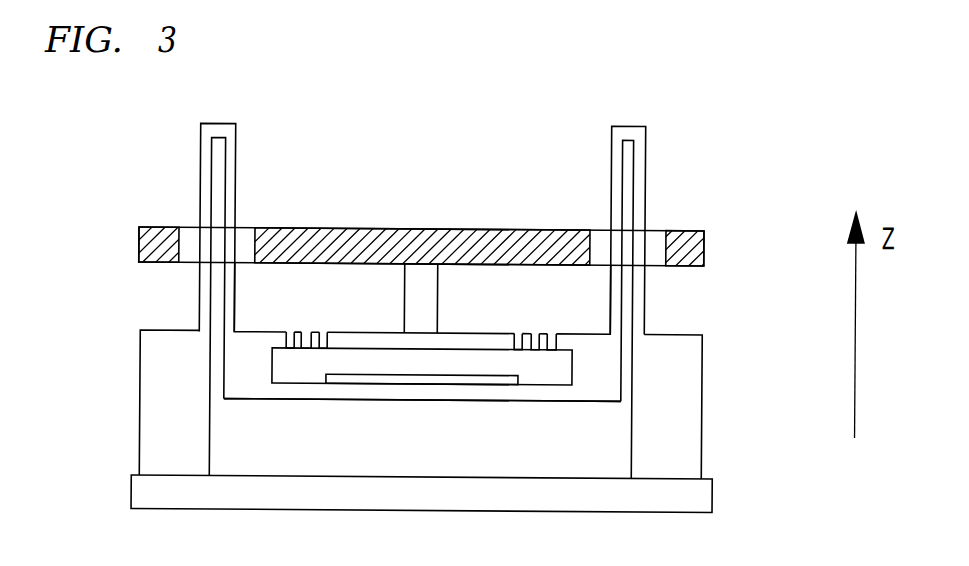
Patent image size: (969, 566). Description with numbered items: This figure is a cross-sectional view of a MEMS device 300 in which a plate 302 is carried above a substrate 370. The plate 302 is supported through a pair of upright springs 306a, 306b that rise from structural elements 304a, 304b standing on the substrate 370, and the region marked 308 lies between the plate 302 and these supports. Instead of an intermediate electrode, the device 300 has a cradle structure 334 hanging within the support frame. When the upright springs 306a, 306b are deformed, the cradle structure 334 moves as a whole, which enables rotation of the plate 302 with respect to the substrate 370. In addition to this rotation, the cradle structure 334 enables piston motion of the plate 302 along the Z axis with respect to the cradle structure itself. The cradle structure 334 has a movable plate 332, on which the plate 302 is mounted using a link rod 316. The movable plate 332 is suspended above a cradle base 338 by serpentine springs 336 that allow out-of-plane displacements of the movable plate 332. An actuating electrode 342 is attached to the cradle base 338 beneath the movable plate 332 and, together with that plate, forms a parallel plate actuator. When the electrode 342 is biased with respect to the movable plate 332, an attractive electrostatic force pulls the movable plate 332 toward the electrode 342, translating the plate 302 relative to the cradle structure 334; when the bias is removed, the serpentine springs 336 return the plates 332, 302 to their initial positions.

The MEMS device 300 is at (40, 533).
The plate 302 is at (458, 227).
The structural element 304a is at (698, 383).
The structural element 304b is at (157, 403).
The upright spring 306a is at (640, 153).
The upright spring 306b is at (235, 150).
The gap 308 is at (245, 210).
The link rod 316 is at (433, 290).
The movable plate 332 is at (368, 331).
The cradle structure 334 is at (312, 410).
The serpentine springs 336 is at (305, 331).
The cradle base 338 is at (572, 398).
The actuating electrode 342 is at (432, 383).
The substrate 370 is at (700, 489).